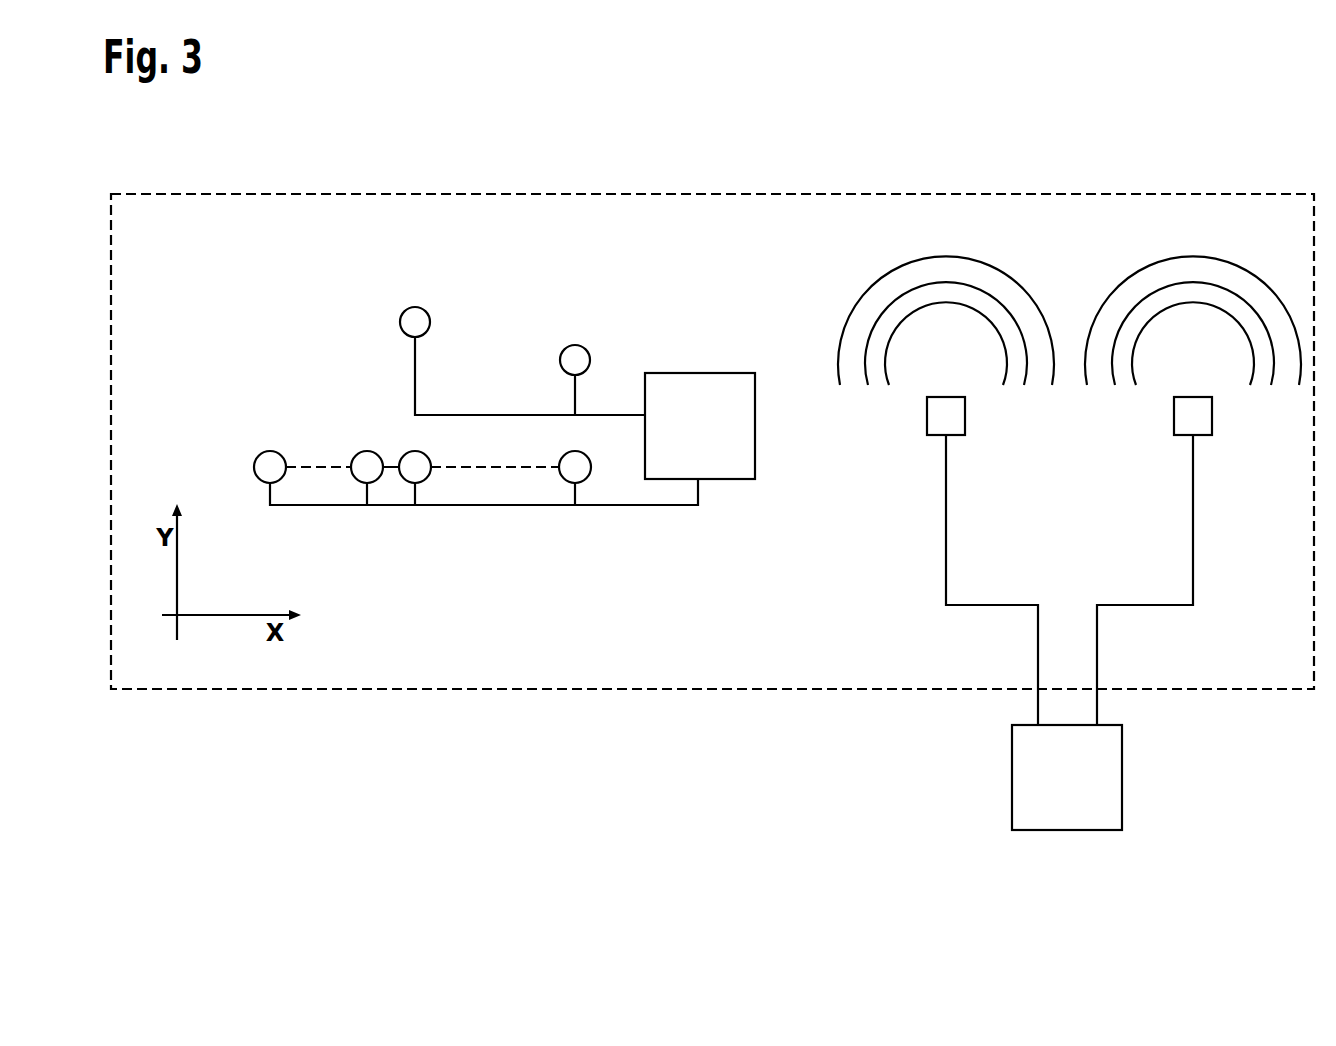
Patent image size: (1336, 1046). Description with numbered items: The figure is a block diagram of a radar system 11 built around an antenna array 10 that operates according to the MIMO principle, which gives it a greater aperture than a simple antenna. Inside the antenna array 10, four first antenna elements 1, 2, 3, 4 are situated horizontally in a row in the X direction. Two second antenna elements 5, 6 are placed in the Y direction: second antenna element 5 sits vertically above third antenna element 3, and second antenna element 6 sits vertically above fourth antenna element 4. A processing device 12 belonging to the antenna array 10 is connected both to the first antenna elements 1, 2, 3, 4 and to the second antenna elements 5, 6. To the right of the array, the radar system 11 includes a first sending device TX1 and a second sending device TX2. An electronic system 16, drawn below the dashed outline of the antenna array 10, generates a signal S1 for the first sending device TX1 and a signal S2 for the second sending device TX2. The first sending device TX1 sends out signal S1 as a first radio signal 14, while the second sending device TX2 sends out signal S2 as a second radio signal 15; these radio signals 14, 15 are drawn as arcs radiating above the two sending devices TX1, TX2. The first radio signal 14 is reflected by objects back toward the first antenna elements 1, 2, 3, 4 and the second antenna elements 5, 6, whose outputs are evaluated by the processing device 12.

The first antenna element 1 is at (254, 467).
The first antenna element 2 is at (376, 481).
The third antenna element 3 is at (422, 482).
The fourth antenna element 4 is at (582, 482).
The second antenna element 5 is at (400, 320).
The second antenna element 6 is at (575, 345).
The antenna array 10 is at (705, 192).
The radar system 11 is at (1053, 165).
The processing device 12 is at (702, 373).
The first radio signal 14 is at (942, 297).
The second radio signal 15 is at (1190, 297).
The electronic system 16 is at (1122, 773).
The first sending device TX1 is at (927, 408).
The second sending device TX2 is at (1174, 408).
The signal S1 is at (945, 548).
The signal S2 is at (1193, 552).